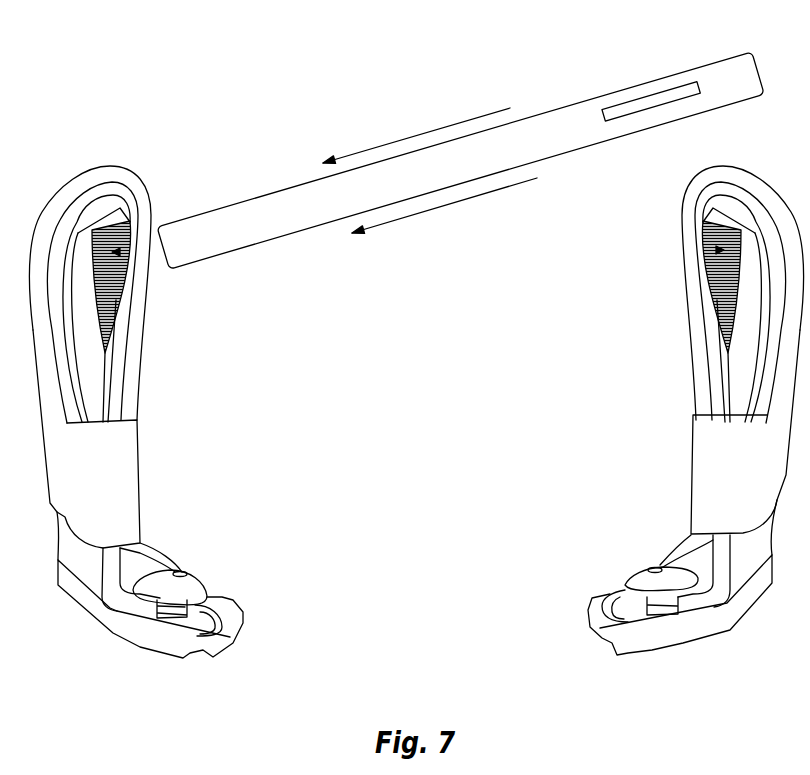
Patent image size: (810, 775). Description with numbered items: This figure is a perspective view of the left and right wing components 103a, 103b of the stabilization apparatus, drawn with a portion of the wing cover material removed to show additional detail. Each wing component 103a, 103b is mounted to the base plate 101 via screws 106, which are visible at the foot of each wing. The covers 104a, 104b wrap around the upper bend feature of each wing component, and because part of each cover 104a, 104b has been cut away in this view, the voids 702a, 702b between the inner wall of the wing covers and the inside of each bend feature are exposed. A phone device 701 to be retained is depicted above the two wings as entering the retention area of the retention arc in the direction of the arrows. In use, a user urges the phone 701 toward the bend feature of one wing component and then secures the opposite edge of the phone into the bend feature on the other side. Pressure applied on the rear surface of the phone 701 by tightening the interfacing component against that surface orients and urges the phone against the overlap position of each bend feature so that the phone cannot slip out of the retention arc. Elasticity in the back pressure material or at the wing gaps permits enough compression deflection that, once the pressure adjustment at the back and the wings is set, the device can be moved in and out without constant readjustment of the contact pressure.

The phone device 701 is at (532, 115).
The cover 104a is at (110, 167).
The cover 104b is at (682, 210).
The left wing component 103a is at (90, 326).
The right wing component 103b is at (752, 262).
The void 702a is at (118, 252).
The void 702b is at (715, 248).
The screws 106 is at (180, 572).
The base plate 101 is at (137, 643).